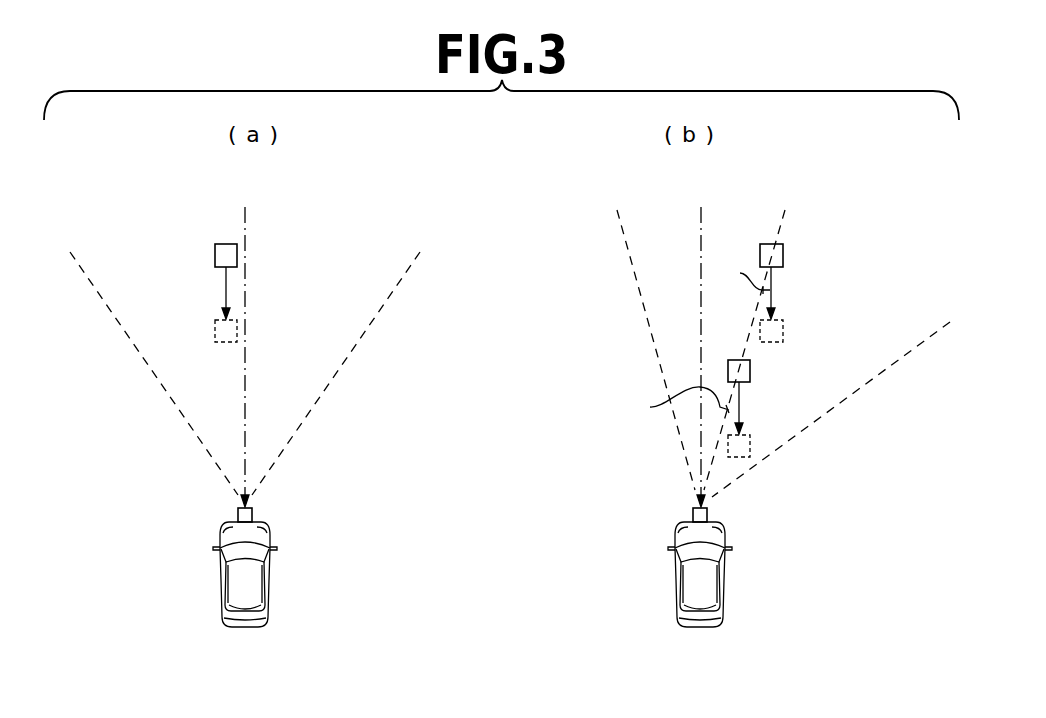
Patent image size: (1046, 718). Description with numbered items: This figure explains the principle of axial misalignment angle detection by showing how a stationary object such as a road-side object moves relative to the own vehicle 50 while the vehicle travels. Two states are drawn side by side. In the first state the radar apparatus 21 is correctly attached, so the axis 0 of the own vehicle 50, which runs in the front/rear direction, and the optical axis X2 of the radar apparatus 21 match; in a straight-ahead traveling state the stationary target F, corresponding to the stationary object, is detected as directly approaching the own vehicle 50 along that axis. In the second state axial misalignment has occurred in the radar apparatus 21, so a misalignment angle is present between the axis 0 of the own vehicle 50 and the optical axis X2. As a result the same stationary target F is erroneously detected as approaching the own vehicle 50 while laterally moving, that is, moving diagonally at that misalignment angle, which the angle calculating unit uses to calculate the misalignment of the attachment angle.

The radar apparatus 21 is at (252, 513).
The own vehicle 50 is at (268, 598).
The stationary target F is at (215, 327).
The optical axis X2 is at (538, 333).
The axis 0 is at (267, 196).